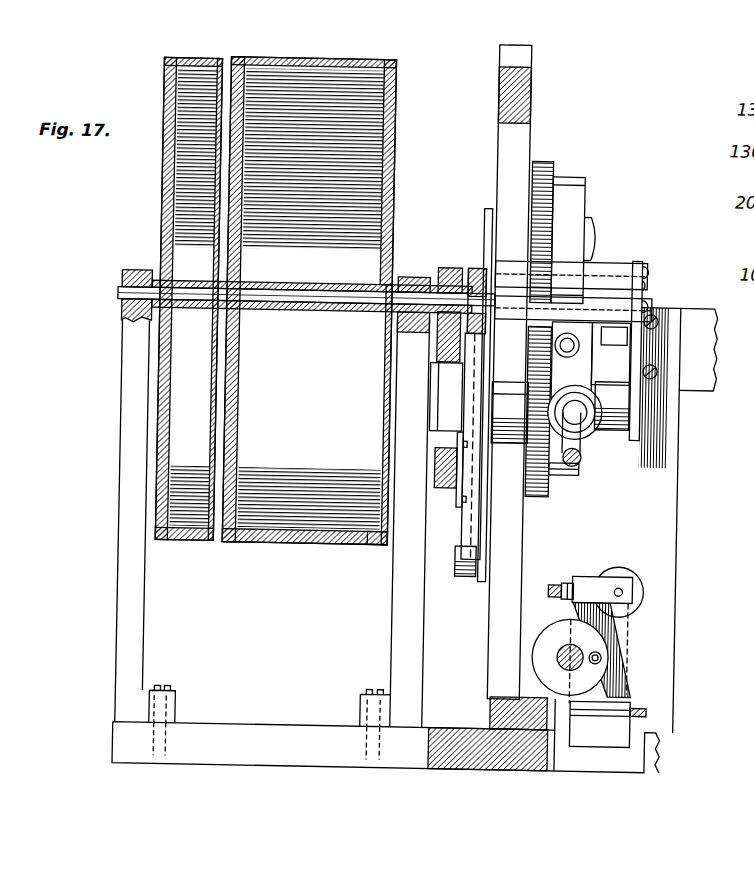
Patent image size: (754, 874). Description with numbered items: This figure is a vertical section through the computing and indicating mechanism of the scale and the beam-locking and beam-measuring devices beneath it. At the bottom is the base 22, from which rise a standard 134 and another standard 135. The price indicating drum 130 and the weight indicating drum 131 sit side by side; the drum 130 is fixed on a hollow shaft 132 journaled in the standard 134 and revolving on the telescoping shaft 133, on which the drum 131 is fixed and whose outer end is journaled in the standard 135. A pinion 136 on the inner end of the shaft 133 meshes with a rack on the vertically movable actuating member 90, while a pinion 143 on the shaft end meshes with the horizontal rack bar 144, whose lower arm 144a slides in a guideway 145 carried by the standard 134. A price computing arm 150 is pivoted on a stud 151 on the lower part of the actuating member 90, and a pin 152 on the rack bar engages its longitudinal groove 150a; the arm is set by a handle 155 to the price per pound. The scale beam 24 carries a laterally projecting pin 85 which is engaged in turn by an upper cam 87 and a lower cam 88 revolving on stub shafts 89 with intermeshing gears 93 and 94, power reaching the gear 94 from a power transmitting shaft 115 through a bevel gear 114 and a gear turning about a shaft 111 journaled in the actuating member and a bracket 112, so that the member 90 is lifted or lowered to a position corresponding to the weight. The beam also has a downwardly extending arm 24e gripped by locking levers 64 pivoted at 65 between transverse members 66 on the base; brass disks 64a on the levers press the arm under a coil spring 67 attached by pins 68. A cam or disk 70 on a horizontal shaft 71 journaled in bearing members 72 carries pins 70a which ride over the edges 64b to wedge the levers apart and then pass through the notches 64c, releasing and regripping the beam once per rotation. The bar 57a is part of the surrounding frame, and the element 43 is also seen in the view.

The base 22 is at (306, 758).
The beam 24 is at (713, 333).
The downwardly extending arm 24e is at (680, 534).
The plate 43 is at (631, 346).
The vertical bar 57a is at (534, 92).
The locking levers 64 is at (612, 745).
The disks 64a is at (647, 584).
The edges 64b is at (622, 622).
The notches 64c is at (648, 688).
The pivot 65 is at (653, 709).
The transverse members 66 is at (493, 712).
The coil spring 67 is at (564, 594).
The pins 68 is at (554, 586).
The cam or disk 70 is at (572, 629).
The pins 70a is at (610, 654).
The horizontal shaft 71 is at (561, 655).
The bearing members 72 is at (537, 648).
The laterally projecting pin 85 is at (578, 318).
The cam 87 is at (583, 179).
The cam 88 is at (581, 464).
The stub shafts 89 is at (594, 231).
The actuating member 90 is at (486, 209).
The gear 93 is at (542, 160).
The gear 94 is at (542, 495).
The shaft 111 is at (645, 416).
The bracket 112 is at (650, 396).
The bevel gear 114 is at (621, 427).
The power transmitting shaft 115 is at (601, 452).
The price indicating drum 130 is at (297, 547).
The weight indicating drum 131 is at (187, 546).
The hollow shaft 132 is at (309, 313).
The telescoping shaft 133 is at (116, 296).
The standard 134 is at (396, 619).
The standard 135 is at (127, 351).
The pinion 136 is at (470, 266).
The pinion 143 is at (444, 270).
The horizontal rack bar 144 is at (436, 340).
The lower arm 144a is at (434, 454).
The guideway 145 is at (394, 546).
The price computing arm 150 is at (421, 562).
The longitudinal groove 150a is at (456, 577).
The stud 151 is at (486, 544).
The pin 152 is at (447, 481).
The handle 155 is at (436, 371).